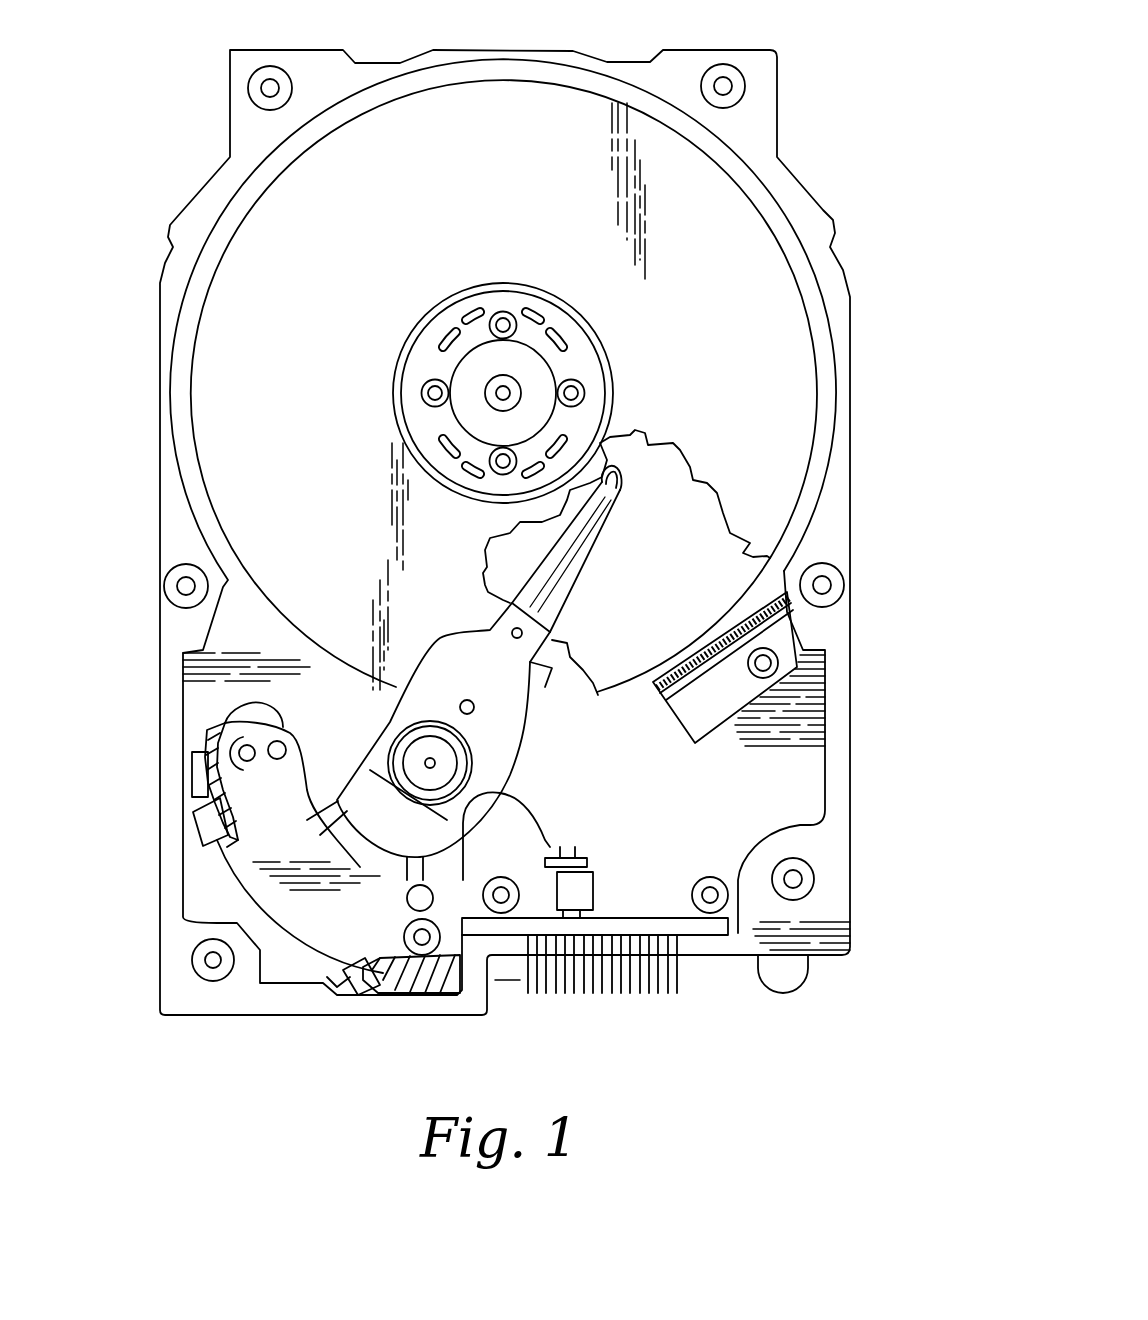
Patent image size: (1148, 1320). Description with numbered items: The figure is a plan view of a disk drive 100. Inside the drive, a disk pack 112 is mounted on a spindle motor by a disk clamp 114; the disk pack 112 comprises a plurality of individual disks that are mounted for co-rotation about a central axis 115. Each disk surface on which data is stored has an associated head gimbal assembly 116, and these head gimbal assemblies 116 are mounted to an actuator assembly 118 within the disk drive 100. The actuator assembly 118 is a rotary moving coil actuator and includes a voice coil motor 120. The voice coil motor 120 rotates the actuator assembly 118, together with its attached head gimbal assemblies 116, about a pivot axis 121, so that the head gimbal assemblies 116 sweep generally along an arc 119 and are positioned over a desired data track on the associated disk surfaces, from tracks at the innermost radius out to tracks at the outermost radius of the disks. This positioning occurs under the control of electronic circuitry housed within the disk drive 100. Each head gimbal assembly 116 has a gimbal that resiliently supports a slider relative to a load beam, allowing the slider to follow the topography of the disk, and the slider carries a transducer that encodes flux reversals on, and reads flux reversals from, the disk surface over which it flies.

The disk drive 100 is at (833, 88).
The disk pack 112 is at (540, 186).
The disk clamp 114 is at (431, 304).
The central axis 115 is at (505, 391).
The head gimbal assembly 116 is at (624, 466).
The actuator assembly 118 is at (553, 649).
The arc 119 is at (568, 516).
The voice coil motor 120 is at (277, 863).
The pivot axis 121 is at (429, 762).